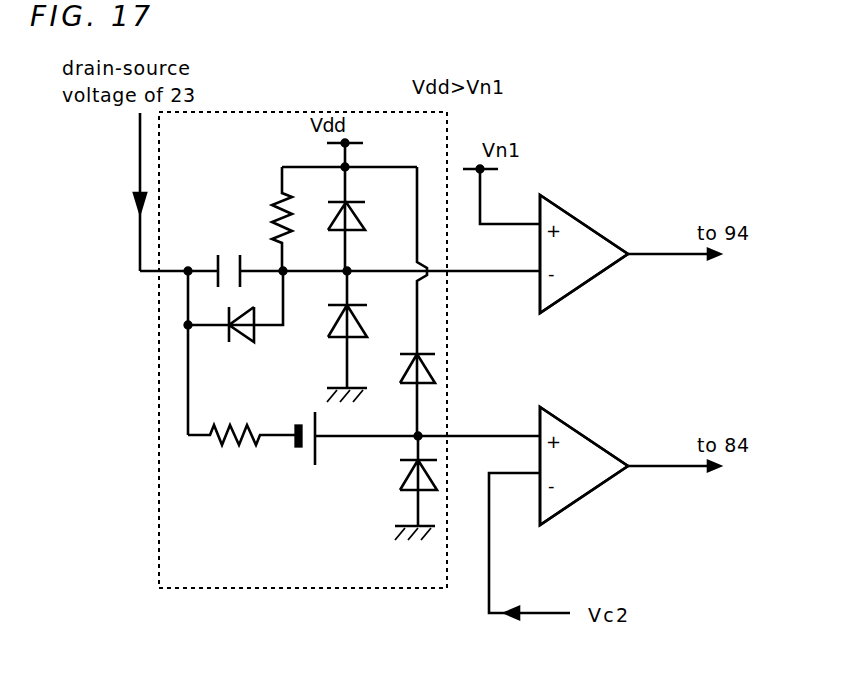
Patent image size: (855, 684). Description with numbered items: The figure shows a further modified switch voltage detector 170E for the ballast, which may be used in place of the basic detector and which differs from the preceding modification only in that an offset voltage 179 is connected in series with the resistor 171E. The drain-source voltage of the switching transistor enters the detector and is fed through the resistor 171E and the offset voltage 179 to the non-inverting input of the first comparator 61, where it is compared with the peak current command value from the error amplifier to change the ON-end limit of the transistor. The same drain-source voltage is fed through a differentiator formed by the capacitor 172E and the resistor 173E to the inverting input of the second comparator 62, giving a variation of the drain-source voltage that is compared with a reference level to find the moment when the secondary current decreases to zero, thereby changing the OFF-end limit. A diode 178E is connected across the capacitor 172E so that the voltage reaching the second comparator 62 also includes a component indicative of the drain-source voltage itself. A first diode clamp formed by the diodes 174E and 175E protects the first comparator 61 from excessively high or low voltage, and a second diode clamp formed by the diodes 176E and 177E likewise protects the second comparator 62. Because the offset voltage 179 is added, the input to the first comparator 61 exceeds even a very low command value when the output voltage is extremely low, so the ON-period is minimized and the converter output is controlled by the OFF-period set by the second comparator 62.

The switch voltage detector 170E is at (159, 588).
The resistor 171E is at (225, 452).
The capacitor 172E is at (222, 247).
The resistor 173E is at (257, 217).
The diode 174E is at (390, 375).
The diode 175E is at (388, 478).
The diode 176E is at (385, 205).
The diode 177E is at (318, 325).
The diode 178E is at (235, 347).
The offset voltage 179 is at (302, 462).
The first comparator 61 is at (583, 430).
The second comparator 62 is at (575, 212).